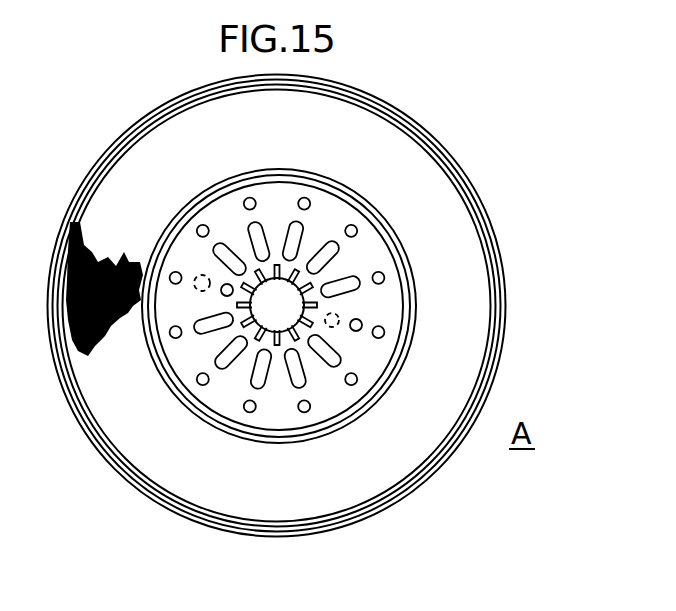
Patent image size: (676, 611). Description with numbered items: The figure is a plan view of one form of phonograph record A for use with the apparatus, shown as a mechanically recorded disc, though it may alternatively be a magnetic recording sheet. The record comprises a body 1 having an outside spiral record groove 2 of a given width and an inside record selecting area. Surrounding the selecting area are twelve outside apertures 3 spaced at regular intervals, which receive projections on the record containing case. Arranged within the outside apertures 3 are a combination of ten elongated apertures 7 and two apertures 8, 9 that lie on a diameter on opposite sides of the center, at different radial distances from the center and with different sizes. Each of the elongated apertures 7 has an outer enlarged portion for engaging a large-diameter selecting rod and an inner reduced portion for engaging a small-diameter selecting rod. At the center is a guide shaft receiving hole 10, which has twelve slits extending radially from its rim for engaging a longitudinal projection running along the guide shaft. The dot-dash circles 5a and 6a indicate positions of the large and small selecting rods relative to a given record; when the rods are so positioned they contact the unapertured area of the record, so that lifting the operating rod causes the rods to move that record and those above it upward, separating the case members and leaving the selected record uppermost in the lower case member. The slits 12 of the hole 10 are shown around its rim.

The body 1 is at (504, 370).
The spiral record groove 2 is at (70, 304).
The outside apertures 3 is at (356, 227).
The position of large-diameter selecting rod 5a is at (196, 278).
The position of small-diameter selecting rod 6a is at (340, 318).
The elongated apertures 7 is at (303, 388).
The aperture 8 is at (360, 331).
The aperture 9 is at (222, 292).
The central guide shaft receiving hole 10 is at (281, 332).
The hub teeth 12 is at (245, 323).